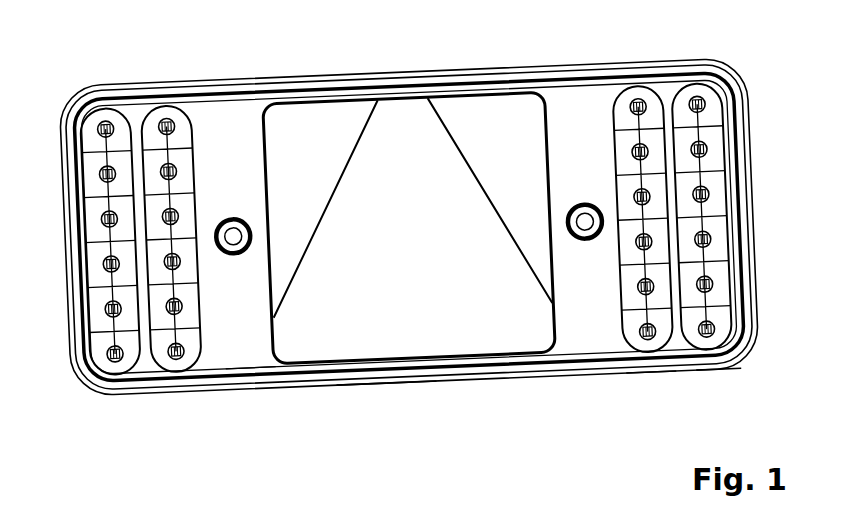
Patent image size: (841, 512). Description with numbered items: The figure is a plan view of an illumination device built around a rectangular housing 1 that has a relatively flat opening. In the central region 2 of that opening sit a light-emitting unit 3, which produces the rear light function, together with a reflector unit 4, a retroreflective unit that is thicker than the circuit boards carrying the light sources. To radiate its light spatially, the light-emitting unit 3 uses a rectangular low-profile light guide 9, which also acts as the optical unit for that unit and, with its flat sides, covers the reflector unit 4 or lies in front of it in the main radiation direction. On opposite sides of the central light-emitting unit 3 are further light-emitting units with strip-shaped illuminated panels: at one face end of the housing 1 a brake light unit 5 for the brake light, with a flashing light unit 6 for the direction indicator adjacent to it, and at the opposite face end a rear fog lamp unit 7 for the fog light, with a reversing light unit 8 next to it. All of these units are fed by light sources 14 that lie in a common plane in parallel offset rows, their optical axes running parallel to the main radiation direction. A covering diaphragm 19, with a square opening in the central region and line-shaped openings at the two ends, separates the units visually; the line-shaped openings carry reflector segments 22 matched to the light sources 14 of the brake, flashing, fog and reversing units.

The housing 1 is at (758, 310).
The central region 2 is at (495, 57).
The light-emitting unit 3 is at (382, 403).
The reflector unit 4 is at (389, 436).
The brake light unit 5 is at (115, 408).
The flashing light unit 6 is at (180, 410).
The rear fog lamp unit 7 is at (713, 382).
The reversing light unit 8 is at (648, 392).
The low-profile light guide 9 is at (520, 127).
The light sources 14 is at (168, 124).
The covering diaphragm 19 is at (243, 358).
The reflector segments 22 is at (103, 270).